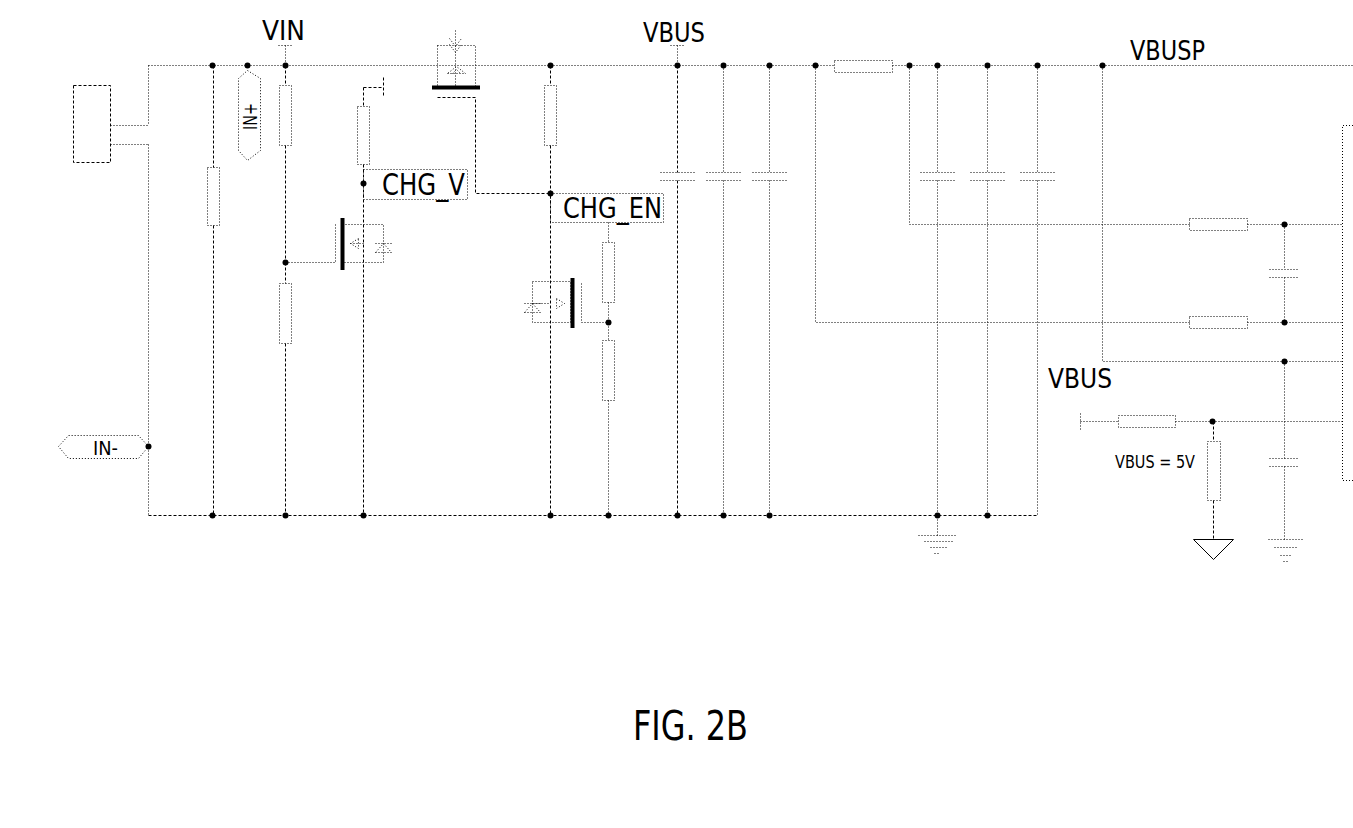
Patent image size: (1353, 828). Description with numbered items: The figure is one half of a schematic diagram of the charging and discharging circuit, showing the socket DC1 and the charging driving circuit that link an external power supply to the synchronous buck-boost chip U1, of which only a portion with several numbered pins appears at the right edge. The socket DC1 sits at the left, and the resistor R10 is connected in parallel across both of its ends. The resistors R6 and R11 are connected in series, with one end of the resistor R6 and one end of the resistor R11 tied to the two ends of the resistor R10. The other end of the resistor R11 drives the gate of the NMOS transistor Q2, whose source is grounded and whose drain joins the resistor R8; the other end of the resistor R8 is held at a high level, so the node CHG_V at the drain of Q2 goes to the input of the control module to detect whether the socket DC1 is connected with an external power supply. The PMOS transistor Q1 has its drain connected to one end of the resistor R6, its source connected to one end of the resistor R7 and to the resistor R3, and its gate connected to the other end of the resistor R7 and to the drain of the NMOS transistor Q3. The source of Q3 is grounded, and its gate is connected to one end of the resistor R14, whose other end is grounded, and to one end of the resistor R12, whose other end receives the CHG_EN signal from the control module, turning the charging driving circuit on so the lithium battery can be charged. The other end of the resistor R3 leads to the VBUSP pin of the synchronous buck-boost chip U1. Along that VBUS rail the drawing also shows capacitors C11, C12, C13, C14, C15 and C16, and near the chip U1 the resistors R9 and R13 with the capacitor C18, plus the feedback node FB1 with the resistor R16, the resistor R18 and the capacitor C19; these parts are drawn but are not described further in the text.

The socket DC1 is at (103, 120).
The resistor R10 is at (187, 291).
The resistor R6 is at (302, 164).
The resistor R11 is at (305, 389).
The NMOS transistor Q2 is at (358, 244).
The resistor R8 is at (393, 296).
The PMOS transistor Q1 is at (491, 97).
The resistor R7 is at (568, 291).
The resistor R12 is at (632, 282).
The resistor R14 is at (632, 428).
The NMOS transistor Q3 is at (548, 301).
The capacitor C11 is at (689, 291).
The capacitor C12 is at (735, 291).
The capacitor C13 is at (781, 291).
The resistor R3 is at (864, 48).
The capacitor C14 is at (949, 310).
The capacitor C15 is at (1000, 291).
The capacitor C16 is at (1050, 291).
The resistor R9 is at (1265, 210).
The resistor R13 is at (1265, 307).
The capacitor C18 is at (1302, 274).
The synchronous buck-boost chip U1 is at (1325, 300).
The resistor R16 is at (1147, 409).
The feedback node FB1 is at (1278, 408).
The resistor R18 is at (1229, 491).
The capacitor C19 is at (1302, 462).